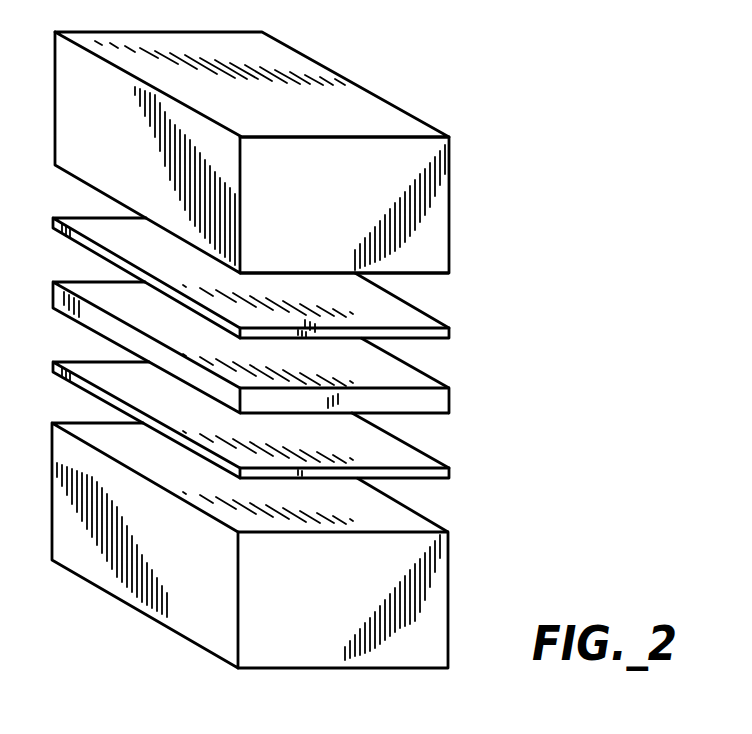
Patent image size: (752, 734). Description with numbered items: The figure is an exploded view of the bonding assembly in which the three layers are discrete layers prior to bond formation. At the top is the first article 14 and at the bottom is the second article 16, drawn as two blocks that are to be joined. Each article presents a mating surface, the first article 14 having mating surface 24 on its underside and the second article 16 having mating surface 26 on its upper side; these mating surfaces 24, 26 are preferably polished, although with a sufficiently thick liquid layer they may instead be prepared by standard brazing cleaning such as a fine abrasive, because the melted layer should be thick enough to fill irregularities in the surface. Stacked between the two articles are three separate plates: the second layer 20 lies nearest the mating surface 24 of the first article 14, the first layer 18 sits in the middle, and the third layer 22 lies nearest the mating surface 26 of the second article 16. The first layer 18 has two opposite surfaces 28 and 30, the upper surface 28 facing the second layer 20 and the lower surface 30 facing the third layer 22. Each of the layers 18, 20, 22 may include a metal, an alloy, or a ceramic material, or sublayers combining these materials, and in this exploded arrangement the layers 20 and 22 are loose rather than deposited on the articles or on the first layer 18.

The first article 14 is at (438, 235).
The mating surface 24 is at (432, 276).
The second layer 20 is at (447, 327).
The surface 28 is at (423, 374).
The first layer 18 is at (447, 402).
The surface 30 is at (436, 415).
The third layer 22 is at (447, 473).
The mating surface 26 is at (419, 521).
The second article 16 is at (437, 628).